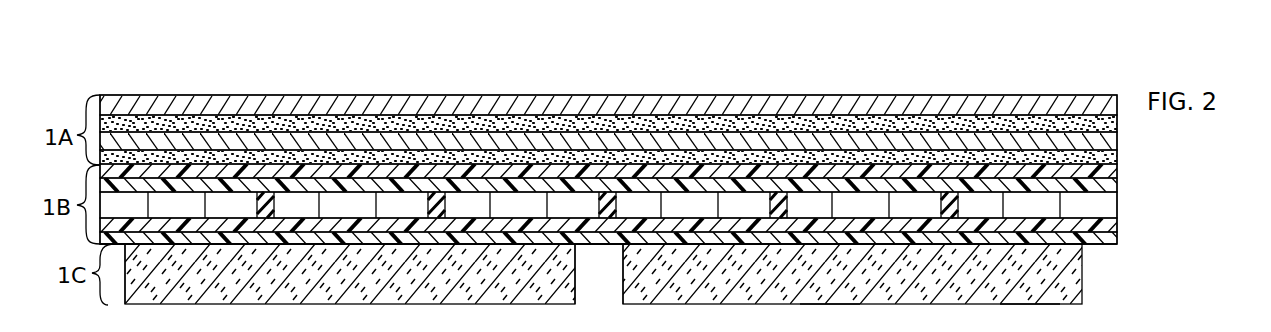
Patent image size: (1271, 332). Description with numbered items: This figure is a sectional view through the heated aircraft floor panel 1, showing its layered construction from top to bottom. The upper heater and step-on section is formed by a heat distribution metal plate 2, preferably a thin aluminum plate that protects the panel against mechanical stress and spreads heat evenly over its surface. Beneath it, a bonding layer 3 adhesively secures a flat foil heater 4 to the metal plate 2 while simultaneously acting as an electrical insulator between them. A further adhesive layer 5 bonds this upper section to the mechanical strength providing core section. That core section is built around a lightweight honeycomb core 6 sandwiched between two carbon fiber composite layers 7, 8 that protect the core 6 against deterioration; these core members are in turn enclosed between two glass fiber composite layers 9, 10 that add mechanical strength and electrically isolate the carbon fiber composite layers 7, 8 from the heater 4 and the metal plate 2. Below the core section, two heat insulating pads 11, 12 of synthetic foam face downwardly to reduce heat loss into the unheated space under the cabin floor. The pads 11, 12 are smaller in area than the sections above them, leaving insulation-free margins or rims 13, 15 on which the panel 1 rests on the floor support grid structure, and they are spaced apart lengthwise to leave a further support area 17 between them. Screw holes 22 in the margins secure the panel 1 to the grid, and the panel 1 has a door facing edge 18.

The panel 1 is at (1203, 192).
The heat distribution metal plate 2 is at (499, 102).
The bonding layer 3 is at (586, 123).
The foil heater 4 is at (729, 141).
The adhesive layer 5 is at (1118, 152).
The honeycomb core 6 is at (1118, 205).
The carbon fiber composite layer 7 is at (1118, 186).
The carbon fiber composite layer 8 is at (1118, 222).
The glass fiber composite layer 9 is at (1118, 168).
The glass fiber composite layer 10 is at (1118, 237).
The heat insulating pad 11 is at (1070, 282).
The heat insulating pad 12 is at (245, 297).
The margin or rim 13 is at (1097, 245).
The margin or rim 15 is at (116, 246).
The support area 17 is at (587, 245).
The door facing edge 18 is at (827, 305).
The screw holes 22 is at (1027, 305).